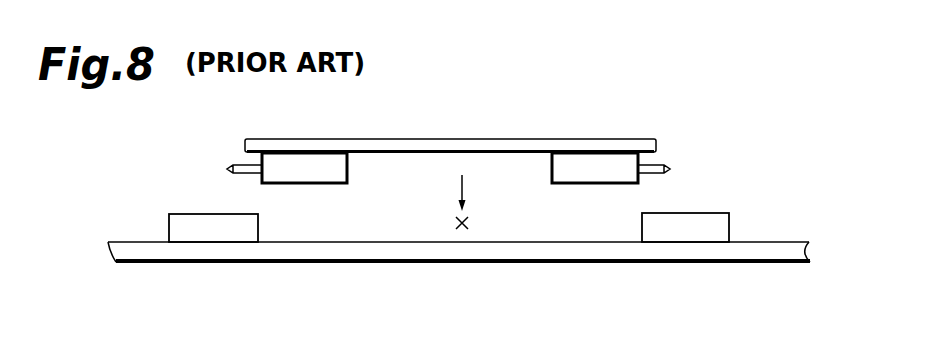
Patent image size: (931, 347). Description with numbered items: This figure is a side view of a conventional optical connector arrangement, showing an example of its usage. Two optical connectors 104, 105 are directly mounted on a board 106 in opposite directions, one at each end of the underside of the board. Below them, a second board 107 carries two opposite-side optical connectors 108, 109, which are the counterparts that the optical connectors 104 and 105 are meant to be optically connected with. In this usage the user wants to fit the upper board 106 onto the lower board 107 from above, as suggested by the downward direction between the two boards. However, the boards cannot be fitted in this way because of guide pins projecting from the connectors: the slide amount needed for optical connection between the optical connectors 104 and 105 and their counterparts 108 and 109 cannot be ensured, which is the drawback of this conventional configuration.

The optical connector 104 is at (325, 163).
The optical connector 105 is at (607, 168).
The board 106 is at (464, 142).
The board 107 is at (428, 252).
The opposite-side optical connector 108 is at (207, 233).
The opposite-side optical connector 109 is at (692, 225).